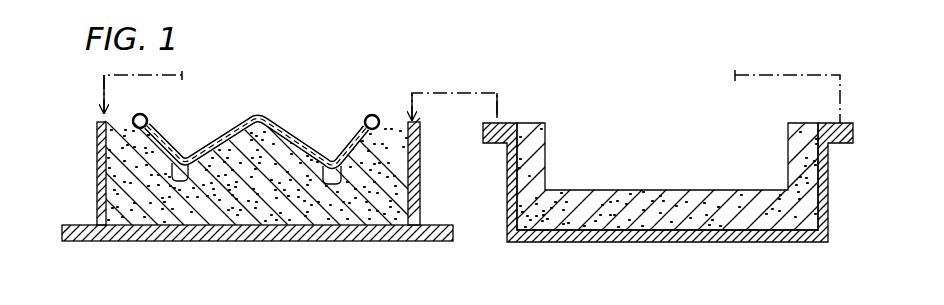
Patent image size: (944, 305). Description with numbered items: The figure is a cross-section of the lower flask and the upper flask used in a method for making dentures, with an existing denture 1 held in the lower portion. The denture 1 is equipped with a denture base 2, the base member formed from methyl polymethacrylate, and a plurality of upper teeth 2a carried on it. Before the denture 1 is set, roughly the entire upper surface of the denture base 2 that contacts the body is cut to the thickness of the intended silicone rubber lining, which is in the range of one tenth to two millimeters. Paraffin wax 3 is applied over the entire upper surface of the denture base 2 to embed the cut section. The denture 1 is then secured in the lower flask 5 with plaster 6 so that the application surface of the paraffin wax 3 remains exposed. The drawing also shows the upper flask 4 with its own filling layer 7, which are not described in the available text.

The denture 1 is at (155, 161).
The denture base 2 is at (152, 158).
The upper teeth 2a is at (343, 184).
The paraffin wax 3 is at (288, 133).
The tray shell 4 is at (823, 172).
The lower flask 5 is at (421, 159).
The plaster 6 is at (395, 201).
The lining layer 7 is at (800, 218).